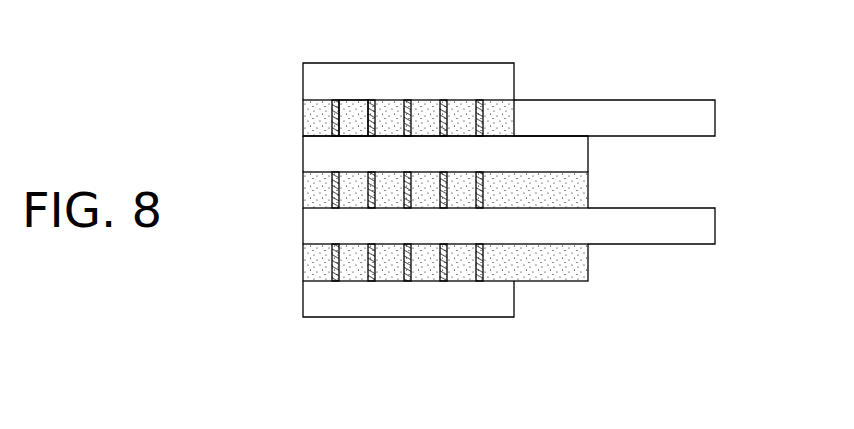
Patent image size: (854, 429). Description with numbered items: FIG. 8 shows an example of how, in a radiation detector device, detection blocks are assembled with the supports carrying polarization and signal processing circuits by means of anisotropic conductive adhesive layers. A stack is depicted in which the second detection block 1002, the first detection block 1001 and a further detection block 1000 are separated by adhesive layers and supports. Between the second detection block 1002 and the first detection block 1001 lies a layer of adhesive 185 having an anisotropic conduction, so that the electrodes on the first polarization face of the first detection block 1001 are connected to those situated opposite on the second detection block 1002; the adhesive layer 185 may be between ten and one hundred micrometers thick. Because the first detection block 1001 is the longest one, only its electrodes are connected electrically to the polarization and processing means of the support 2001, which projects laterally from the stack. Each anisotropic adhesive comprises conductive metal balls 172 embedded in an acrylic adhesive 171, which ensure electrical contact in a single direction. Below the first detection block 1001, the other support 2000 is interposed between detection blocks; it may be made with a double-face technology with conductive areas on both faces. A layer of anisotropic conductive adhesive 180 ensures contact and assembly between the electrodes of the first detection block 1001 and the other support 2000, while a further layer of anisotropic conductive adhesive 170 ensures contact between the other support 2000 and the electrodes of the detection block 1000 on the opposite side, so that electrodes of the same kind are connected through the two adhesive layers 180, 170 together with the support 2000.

The second detection block 1002 is at (486, 79).
The first detection block 1001 is at (314, 151).
The detection block 1000 is at (346, 304).
The support 2001 is at (658, 110).
The other support 2000 is at (656, 226).
The anisotropic conductive adhesive layer 185 is at (301, 119).
The anisotropic conductive adhesive layer 180 is at (315, 192).
The anisotropic conductive adhesive layer 170 is at (317, 263).
The acrylic adhesive 171 is at (423, 110).
The conductive metal balls 172 is at (338, 108).